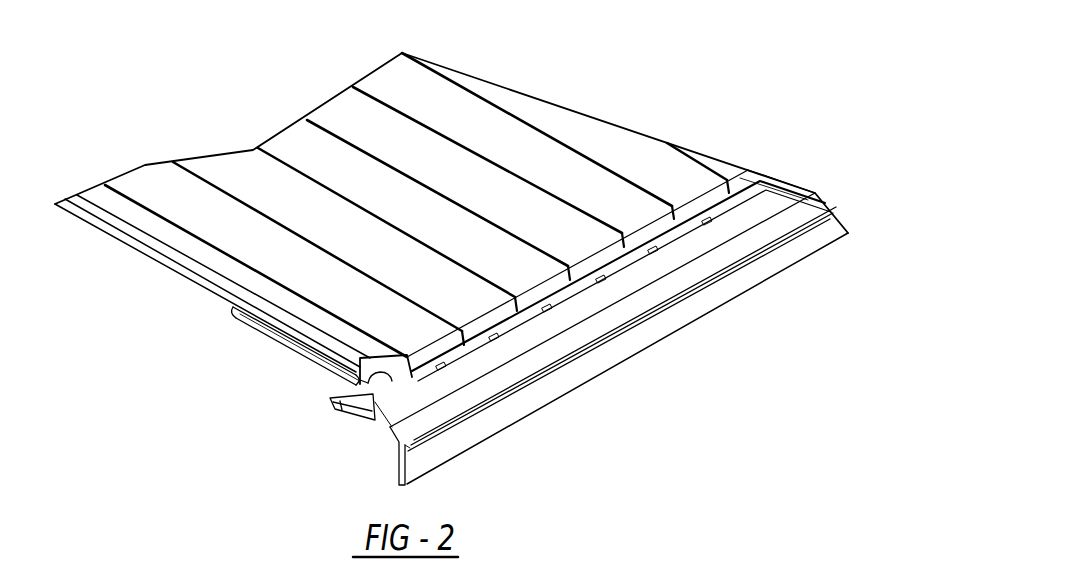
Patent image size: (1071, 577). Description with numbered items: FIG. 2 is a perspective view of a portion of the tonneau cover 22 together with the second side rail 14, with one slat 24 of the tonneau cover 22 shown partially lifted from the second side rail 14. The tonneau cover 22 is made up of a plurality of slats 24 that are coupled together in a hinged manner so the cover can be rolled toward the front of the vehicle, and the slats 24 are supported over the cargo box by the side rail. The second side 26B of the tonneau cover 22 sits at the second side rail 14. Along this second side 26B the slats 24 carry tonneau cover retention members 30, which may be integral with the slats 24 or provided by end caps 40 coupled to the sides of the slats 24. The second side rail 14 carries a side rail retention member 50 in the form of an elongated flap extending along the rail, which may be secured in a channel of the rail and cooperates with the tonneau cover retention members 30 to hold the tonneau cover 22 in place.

The second side rail 14 is at (447, 396).
The tonneau cover 22 is at (232, 165).
The slats 24 is at (307, 147).
The second side 26B is at (645, 220).
The tonneau cover retention members 30 is at (357, 382).
The end caps 40 is at (275, 331).
The side rail retention members 50 is at (340, 393).